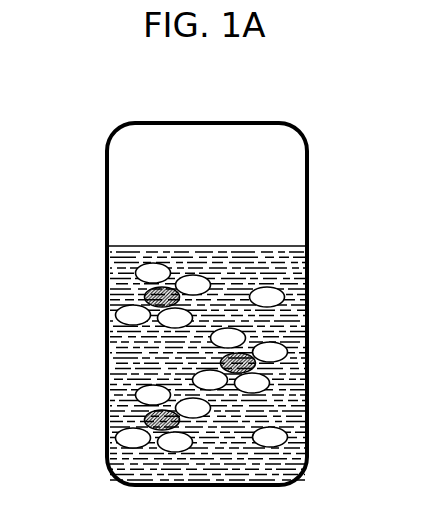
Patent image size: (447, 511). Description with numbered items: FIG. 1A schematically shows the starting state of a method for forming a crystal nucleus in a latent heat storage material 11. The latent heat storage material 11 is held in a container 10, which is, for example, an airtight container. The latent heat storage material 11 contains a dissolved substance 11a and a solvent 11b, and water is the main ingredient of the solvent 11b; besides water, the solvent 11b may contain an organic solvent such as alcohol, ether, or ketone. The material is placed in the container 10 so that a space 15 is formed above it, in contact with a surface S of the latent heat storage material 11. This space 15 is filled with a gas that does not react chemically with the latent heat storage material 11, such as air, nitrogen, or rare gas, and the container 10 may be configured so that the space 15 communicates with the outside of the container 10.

The container 10 is at (262, 122).
The space 15 is at (146, 177).
The surface S is at (153, 245).
The latent heat storage material 11 is at (152, 366).
The dissolved substance 11a is at (221, 362).
The solvent 11b is at (136, 274).